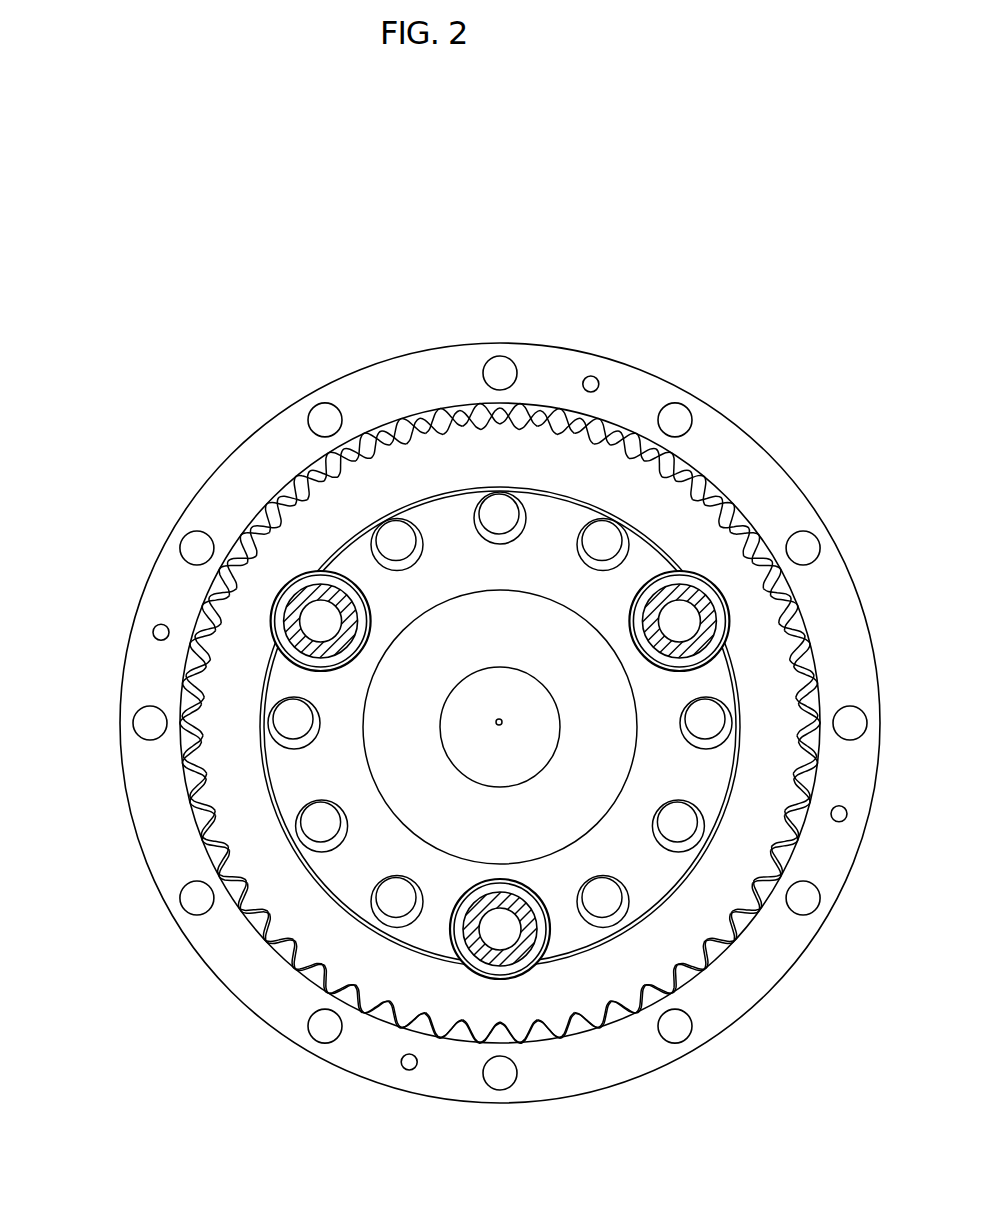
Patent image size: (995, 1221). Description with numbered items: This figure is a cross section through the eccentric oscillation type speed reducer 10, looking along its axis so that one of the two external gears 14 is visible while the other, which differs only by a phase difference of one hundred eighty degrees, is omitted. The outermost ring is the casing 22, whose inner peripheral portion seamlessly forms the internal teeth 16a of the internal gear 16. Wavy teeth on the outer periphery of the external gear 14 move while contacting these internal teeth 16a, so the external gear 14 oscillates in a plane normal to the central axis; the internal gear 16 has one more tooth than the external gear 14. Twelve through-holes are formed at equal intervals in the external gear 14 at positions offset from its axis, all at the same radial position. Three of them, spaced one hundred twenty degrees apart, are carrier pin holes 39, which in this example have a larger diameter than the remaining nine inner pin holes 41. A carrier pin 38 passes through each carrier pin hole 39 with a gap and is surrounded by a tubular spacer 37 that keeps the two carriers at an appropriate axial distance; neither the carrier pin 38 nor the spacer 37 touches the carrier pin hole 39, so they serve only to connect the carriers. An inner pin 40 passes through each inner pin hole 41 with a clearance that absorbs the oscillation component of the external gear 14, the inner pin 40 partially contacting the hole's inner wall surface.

The eccentric oscillation type speed reducer 10 is at (779, 378).
The external gear 14 is at (630, 477).
The internal gear 16 is at (500, 678).
The internal tooth 16a is at (537, 410).
The casing 22 is at (372, 400).
The spacer 37 is at (475, 953).
The carrier pin 38 is at (503, 940).
The carrier pin hole 39 is at (533, 953).
The inner pin 40 is at (288, 722).
The inner pin hole 41 is at (277, 735).